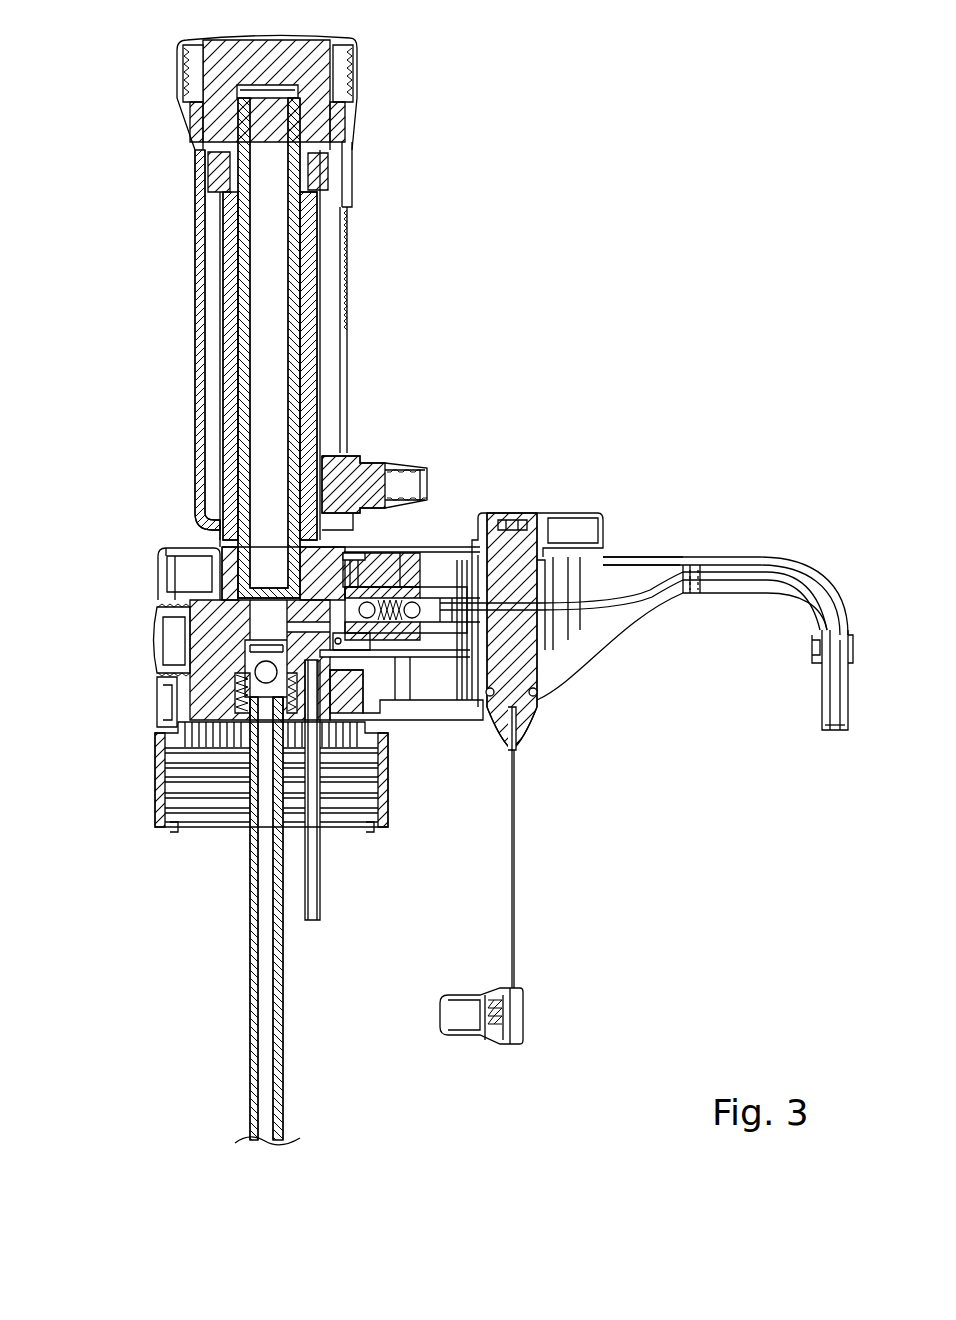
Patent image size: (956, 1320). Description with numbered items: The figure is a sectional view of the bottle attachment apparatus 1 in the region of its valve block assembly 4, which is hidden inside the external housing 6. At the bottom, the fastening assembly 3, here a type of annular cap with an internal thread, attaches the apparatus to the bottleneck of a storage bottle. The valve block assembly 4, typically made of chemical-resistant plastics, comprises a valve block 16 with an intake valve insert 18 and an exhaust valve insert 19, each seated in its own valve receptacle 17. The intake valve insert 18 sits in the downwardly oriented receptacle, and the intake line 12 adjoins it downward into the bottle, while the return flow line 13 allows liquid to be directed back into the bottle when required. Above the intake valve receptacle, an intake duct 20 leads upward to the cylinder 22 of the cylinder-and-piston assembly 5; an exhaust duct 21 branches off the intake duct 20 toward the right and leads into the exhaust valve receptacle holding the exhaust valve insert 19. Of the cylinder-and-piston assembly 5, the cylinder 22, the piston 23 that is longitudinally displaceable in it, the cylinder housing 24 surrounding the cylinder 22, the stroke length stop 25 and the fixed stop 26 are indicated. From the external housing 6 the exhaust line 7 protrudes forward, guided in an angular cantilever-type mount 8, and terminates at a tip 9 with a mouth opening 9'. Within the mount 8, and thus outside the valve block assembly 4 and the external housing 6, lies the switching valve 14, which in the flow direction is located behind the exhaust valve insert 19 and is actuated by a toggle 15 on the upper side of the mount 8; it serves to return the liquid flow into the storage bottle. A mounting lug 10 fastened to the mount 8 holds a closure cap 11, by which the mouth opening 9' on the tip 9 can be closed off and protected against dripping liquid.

The bottle attachment apparatus 1 is at (534, 187).
The fastening assembly 3 is at (163, 778).
The valve block assembly 4 is at (187, 588).
The cylinder-and-piston assembly 5 is at (160, 136).
The external housing 6 is at (170, 552).
The exhaust line 7 is at (740, 560).
The mount 8 is at (632, 560).
The tip 9 is at (808, 691).
The mouth opening 9' is at (835, 761).
The mounting lug 10 is at (513, 885).
The closure cap 11 is at (468, 1027).
The intake line 12 is at (250, 960).
The return flow line 13 is at (307, 875).
The switching valve 14 is at (520, 675).
The toggle 15 is at (552, 520).
The valve block 16 is at (232, 620).
The valve receptacle 17 is at (187, 720).
The intake valve insert 18 is at (193, 690).
The exhaust valve insert 19 is at (412, 570).
The intake duct 20 is at (240, 630).
The exhaust duct 21 is at (360, 545).
The cylinder 22 is at (230, 175).
The piston 23 is at (243, 280).
The cylinder housing 24 is at (200, 235).
The stroke length stop 25 is at (356, 455).
The fixed stop 26 is at (327, 183).